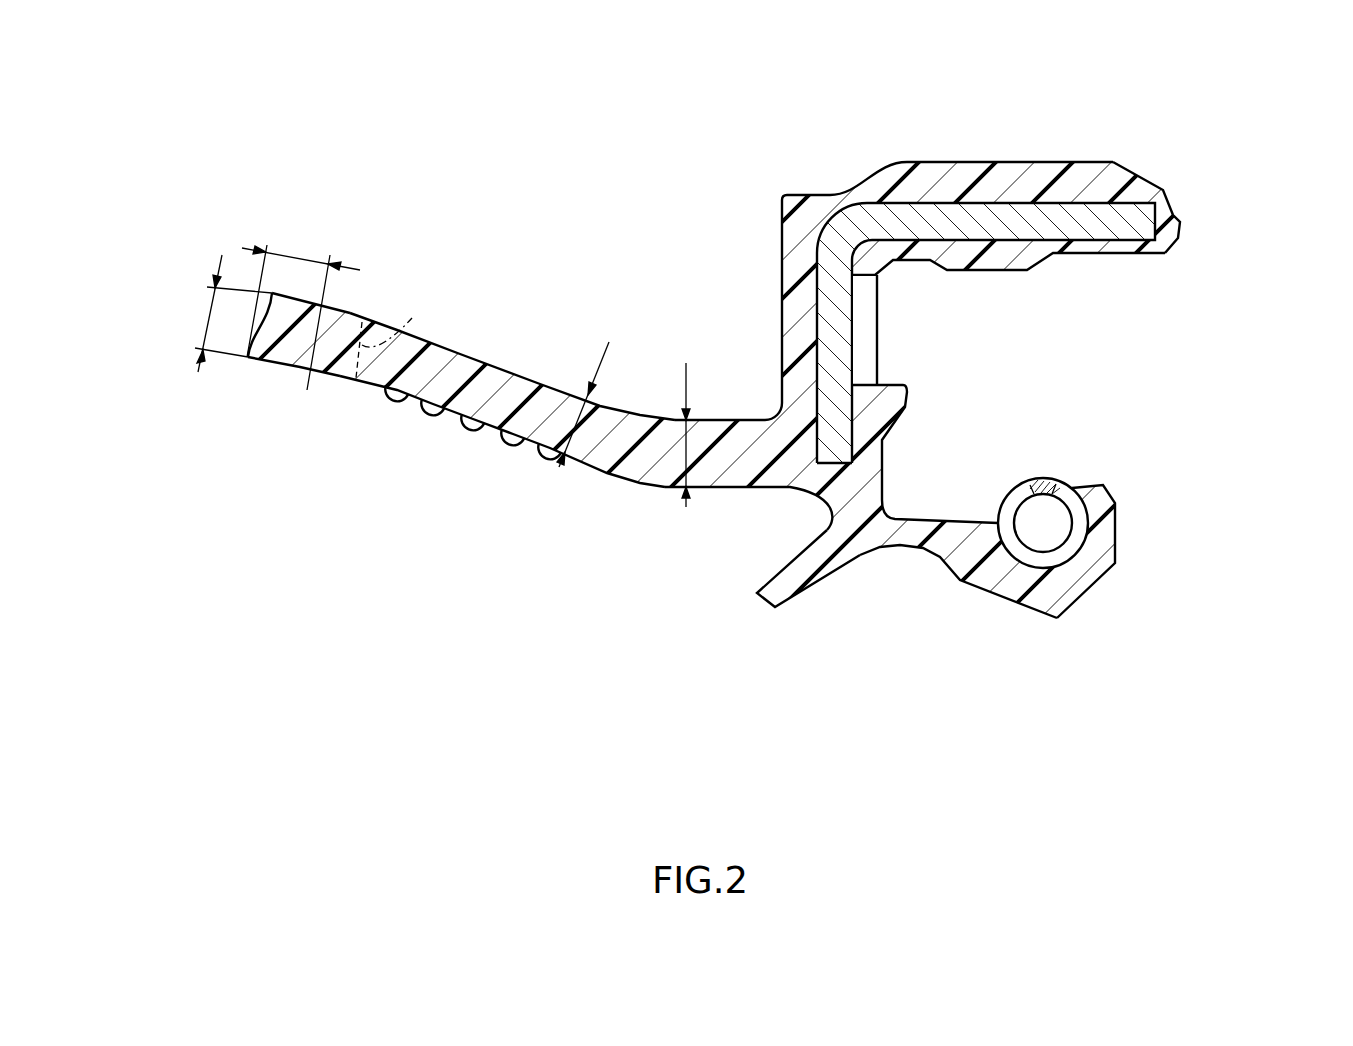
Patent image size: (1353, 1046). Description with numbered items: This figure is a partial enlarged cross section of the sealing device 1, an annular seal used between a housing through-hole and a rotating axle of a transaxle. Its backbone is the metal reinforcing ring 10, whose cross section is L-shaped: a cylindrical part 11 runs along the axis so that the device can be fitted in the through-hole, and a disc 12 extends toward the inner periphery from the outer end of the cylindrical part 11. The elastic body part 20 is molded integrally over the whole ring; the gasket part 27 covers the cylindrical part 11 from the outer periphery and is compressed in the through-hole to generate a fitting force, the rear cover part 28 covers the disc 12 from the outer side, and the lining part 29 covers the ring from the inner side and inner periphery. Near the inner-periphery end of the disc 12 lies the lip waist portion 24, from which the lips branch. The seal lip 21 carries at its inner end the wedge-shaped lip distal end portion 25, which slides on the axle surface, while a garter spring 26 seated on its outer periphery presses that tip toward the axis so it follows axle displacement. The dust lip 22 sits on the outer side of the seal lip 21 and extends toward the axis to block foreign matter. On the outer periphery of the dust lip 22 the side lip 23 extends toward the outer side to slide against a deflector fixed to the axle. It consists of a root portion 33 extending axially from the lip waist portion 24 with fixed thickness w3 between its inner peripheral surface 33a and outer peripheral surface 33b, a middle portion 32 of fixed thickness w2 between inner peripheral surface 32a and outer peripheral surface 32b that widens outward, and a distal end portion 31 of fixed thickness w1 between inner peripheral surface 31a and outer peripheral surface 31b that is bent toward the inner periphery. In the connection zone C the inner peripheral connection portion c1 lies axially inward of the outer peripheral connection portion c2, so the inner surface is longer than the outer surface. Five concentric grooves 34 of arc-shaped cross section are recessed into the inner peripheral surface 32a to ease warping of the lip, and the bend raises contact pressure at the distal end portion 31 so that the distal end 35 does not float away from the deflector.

The sealing device 1 is at (690, 771).
The reinforcing ring 10 is at (1142, 190).
The cylindrical part 11 is at (1107, 230).
The disc 12 is at (848, 323).
The elastic body part 20 is at (768, 175).
The seal lip 21 is at (1128, 530).
The dust lip 22 is at (805, 576).
The side lip 23 is at (190, 302).
The lip waist portion 24 is at (862, 460).
The lip distal end portion 25 is at (1062, 600).
The garter spring 26 is at (1046, 485).
The gasket part 27 is at (1012, 180).
The rear cover part 28 is at (800, 241).
The lining part 29 is at (1003, 258).
The distal end portion 31 is at (313, 356).
The inner peripheral surface 31a is at (320, 372).
The outer peripheral surface 31b is at (337, 307).
The middle portion 32 is at (507, 413).
The inner peripheral surface 32a is at (450, 420).
The outer peripheral surface 32b is at (457, 348).
The root portion 33 is at (748, 438).
The inner peripheral surface 33a is at (708, 490).
The outer peripheral surface 33b is at (740, 412).
The groove 34 is at (395, 408).
The distal end 35 is at (268, 297).
The connection zone C is at (401, 321).
The inner peripheral connection portion c1 is at (357, 380).
The outer peripheral connection portion c2 is at (362, 318).
The thickness of the distal end portion w1 is at (199, 262).
The thickness of the middle portion w2 is at (597, 404).
The thickness of the root portion w3 is at (667, 435).